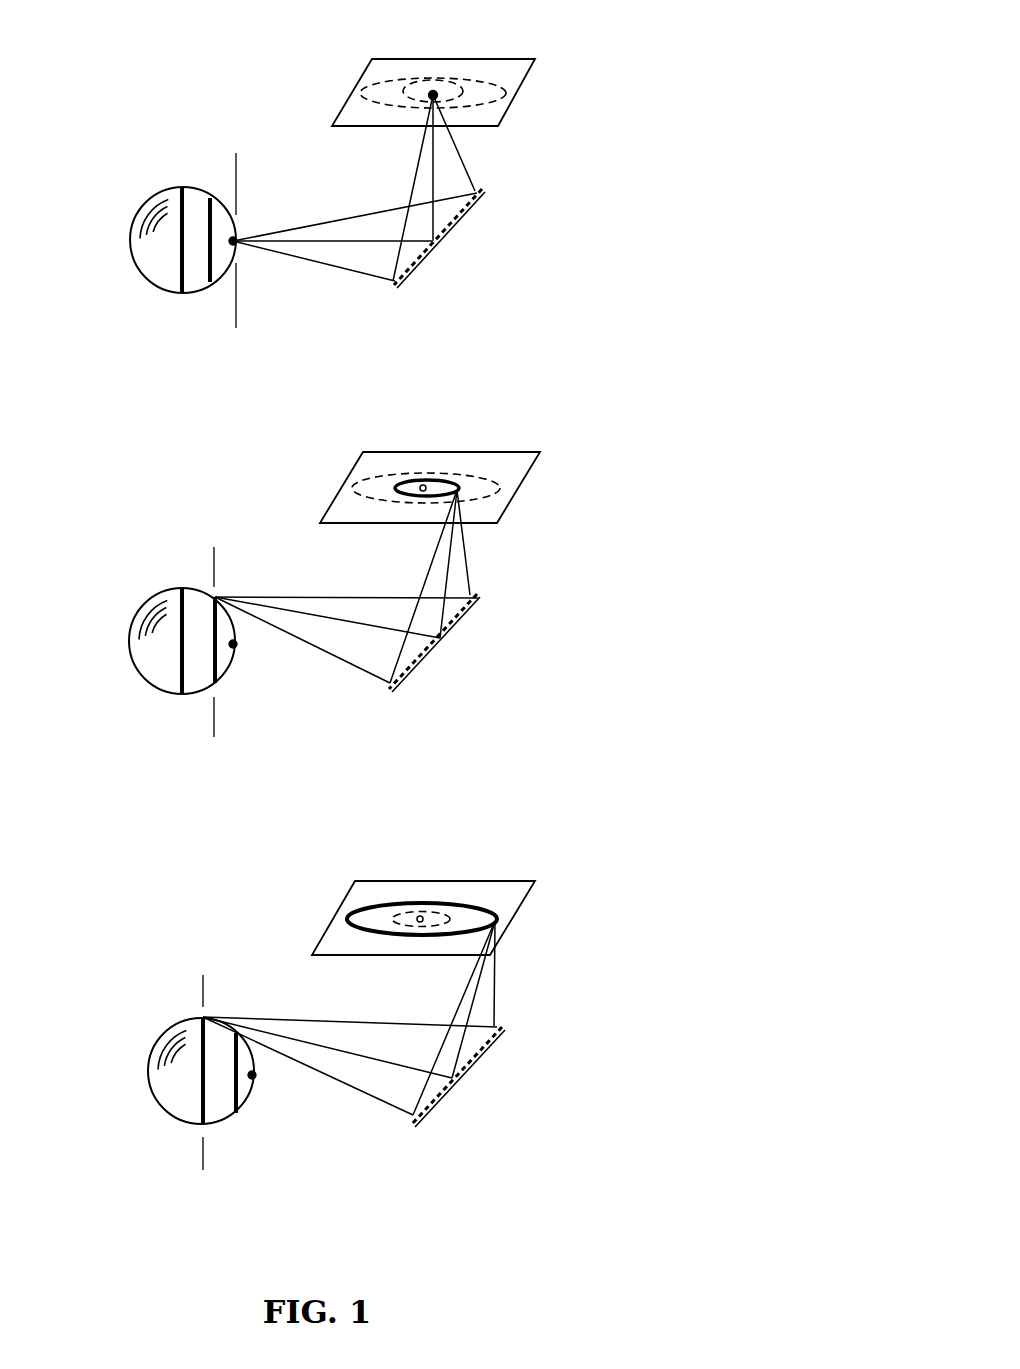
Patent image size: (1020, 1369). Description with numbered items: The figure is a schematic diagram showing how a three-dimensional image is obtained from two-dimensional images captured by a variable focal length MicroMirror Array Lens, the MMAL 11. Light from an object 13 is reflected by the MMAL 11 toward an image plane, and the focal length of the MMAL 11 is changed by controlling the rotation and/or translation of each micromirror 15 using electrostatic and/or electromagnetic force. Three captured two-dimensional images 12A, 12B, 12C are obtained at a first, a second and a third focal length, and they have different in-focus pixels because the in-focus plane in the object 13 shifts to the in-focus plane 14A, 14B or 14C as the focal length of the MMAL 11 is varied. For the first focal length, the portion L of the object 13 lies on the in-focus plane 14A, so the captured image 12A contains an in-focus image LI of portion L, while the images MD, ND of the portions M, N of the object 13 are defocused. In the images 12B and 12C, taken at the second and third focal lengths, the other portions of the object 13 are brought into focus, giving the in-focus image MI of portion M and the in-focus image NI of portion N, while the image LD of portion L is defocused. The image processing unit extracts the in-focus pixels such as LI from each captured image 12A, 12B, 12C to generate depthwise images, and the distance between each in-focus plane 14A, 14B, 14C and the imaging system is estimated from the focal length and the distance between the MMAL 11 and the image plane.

The variable focal length MicroMirror Array Lens (MMAL) 11 is at (428, 272).
The captured two-dimensional image with the first focal length 12A is at (523, 113).
The captured two-dimensional image with the second focal length 12B is at (520, 505).
The captured two-dimensional image with the third focal length 12C is at (527, 920).
The object 13 is at (165, 182).
The in-focus plane 14A is at (242, 225).
The in-focus plane 14B is at (224, 625).
The in-focus plane 14C is at (211, 1057).
The micromirror 15 is at (392, 283).
The portion L of the object L is at (243, 232).
The portion M of the object M is at (210, 282).
The portion N of the object N is at (178, 293).
The in-focus image of portion L LI is at (412, 92).
The defocused image of portion M MD is at (440, 83).
The defocused image of portion N ND is at (490, 80).
The defocus spot of L LD is at (432, 480).
The image ring of M MI is at (395, 487).
The image ring of N NI is at (357, 912).